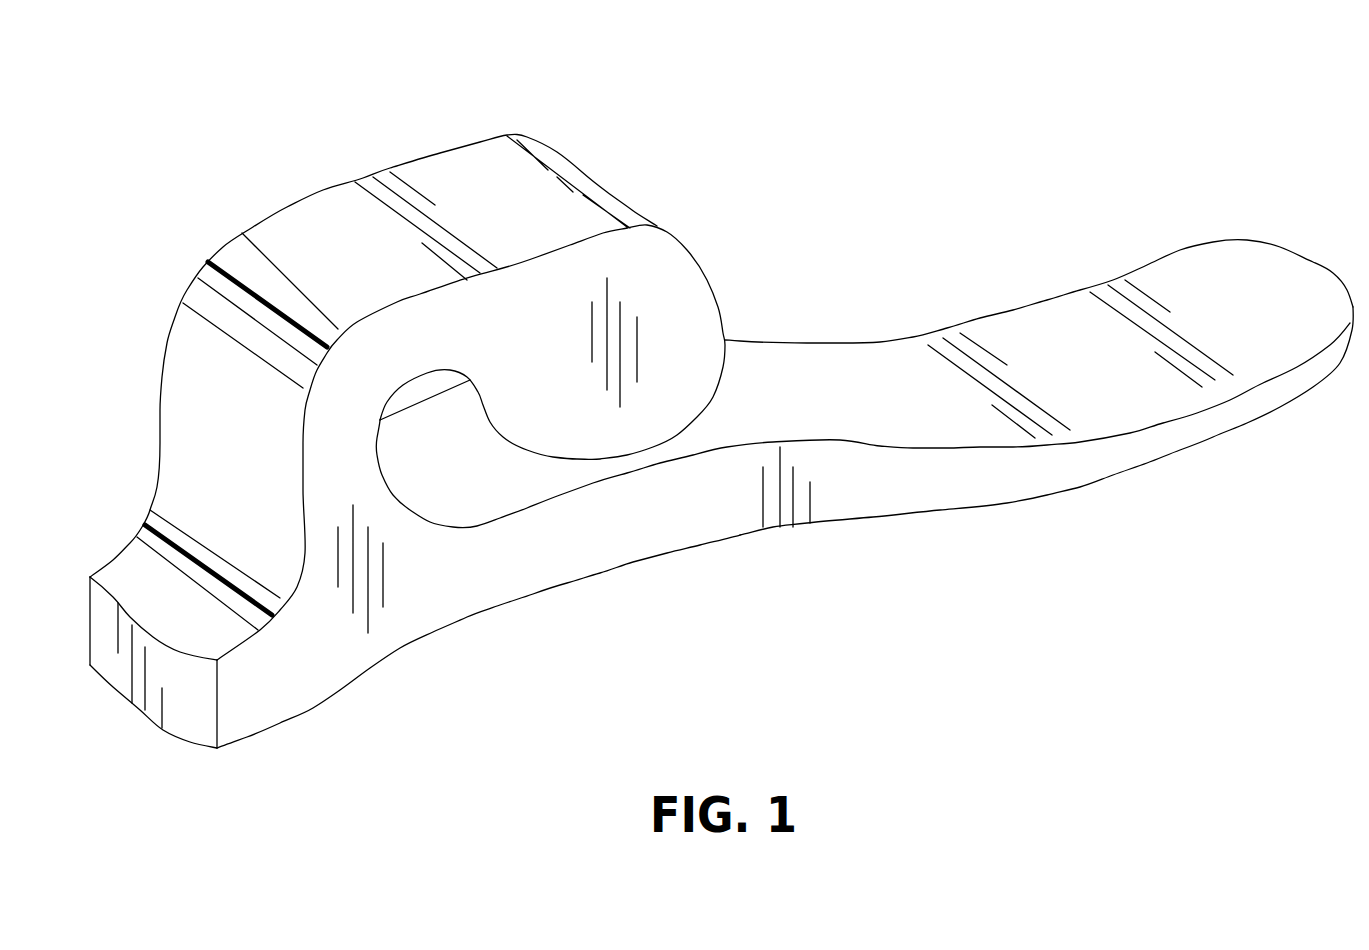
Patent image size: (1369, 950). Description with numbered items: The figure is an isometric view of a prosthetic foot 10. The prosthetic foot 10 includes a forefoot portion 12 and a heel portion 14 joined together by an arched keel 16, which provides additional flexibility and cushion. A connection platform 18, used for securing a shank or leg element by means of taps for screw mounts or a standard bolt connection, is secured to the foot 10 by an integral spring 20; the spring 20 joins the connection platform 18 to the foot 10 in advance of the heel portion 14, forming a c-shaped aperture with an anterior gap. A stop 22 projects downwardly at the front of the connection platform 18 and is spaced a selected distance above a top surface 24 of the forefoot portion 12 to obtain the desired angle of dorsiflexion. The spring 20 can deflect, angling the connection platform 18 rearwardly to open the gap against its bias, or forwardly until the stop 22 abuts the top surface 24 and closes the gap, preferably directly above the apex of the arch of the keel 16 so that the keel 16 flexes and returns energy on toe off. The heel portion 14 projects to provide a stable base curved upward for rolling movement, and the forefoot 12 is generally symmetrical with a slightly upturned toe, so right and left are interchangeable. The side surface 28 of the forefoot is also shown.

The prosthetic foot 10 is at (930, 638).
The forefoot portion 12 is at (1065, 322).
The heel portion 14 is at (333, 690).
The arched keel 16 is at (733, 540).
The connection platform 18 is at (452, 172).
The integral spring 20 is at (225, 265).
The stop 22 is at (690, 250).
The top surface 24 is at (768, 362).
The side surface 28 is at (1133, 477).